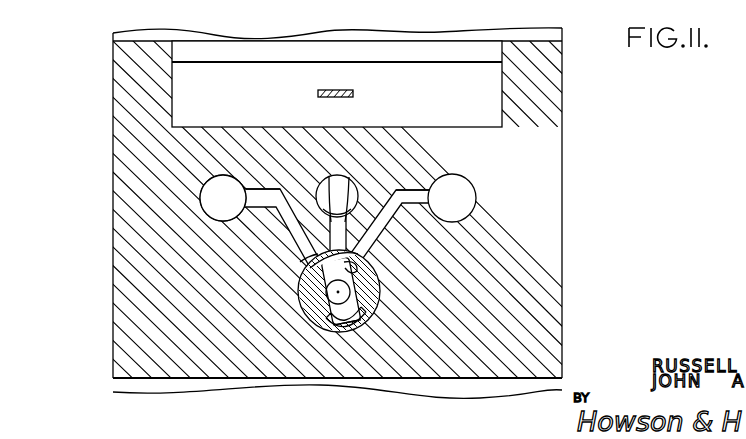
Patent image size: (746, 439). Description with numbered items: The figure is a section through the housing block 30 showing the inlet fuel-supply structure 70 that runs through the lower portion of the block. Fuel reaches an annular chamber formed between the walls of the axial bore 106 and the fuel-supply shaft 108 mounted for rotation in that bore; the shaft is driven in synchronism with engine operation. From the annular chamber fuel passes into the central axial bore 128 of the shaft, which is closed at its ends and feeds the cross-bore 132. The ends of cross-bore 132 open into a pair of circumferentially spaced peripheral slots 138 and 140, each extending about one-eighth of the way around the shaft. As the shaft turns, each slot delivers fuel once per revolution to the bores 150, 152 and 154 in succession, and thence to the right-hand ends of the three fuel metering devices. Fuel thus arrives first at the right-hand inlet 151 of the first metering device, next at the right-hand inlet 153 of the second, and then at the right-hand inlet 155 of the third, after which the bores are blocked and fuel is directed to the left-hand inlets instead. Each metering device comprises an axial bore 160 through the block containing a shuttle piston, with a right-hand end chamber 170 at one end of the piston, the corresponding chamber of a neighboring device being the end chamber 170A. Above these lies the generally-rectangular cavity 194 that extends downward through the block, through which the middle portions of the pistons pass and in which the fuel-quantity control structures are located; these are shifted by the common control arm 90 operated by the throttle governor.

The housing block 30 is at (120, 181).
The inlet fuel-supply structure 70 is at (323, 326).
The common control arm 90 is at (355, 93).
The axial bore 106 is at (316, 297).
The fuel-supply shaft 108 is at (380, 308).
The central axial bore 128 is at (332, 285).
The cross-bore 132 is at (348, 272).
The peripheral slot 138 is at (308, 256).
The peripheral slot 140 is at (370, 329).
The bore 150 is at (298, 229).
The right-hand inlet 151 is at (266, 191).
The bore 152 is at (349, 222).
The right-hand inlet 153 is at (344, 177).
The bore 154 is at (378, 229).
The right-hand inlet 155 is at (418, 191).
The axial bore 160 is at (201, 198).
The right-hand end chamber 170 is at (220, 190).
The right-hand end chamber 170A is at (345, 176).
The generally-rectangular cavity 194 is at (426, 128).